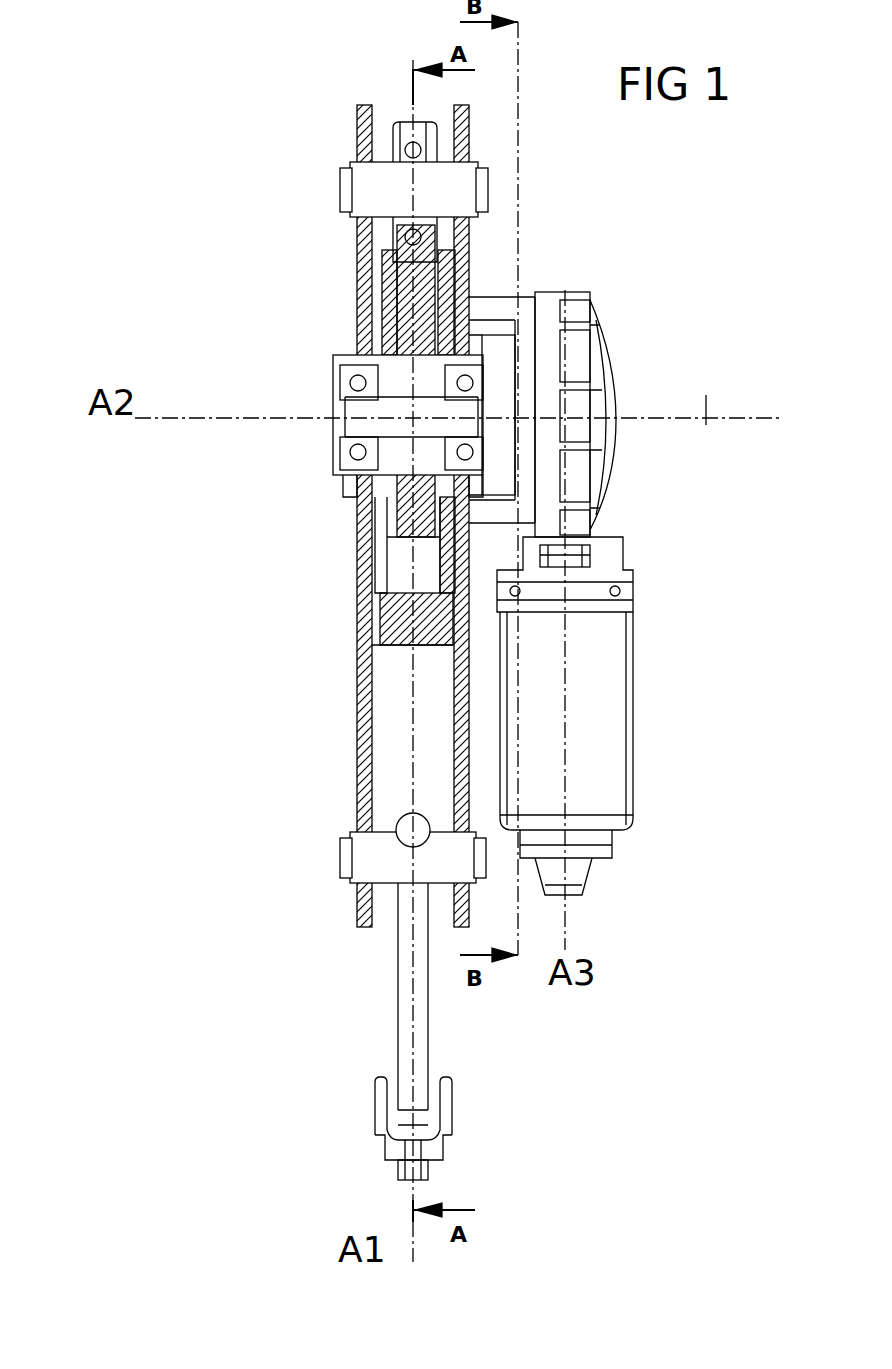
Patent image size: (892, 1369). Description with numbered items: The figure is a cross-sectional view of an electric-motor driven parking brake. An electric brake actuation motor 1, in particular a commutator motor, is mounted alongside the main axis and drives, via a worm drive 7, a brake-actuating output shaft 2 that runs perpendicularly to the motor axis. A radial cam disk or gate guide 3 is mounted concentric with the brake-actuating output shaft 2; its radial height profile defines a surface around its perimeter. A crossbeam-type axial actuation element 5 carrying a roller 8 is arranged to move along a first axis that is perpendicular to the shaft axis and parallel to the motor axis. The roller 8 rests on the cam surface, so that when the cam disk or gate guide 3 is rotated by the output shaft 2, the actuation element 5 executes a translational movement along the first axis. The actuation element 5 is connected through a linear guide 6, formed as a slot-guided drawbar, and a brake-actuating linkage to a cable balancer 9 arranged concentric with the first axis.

The electric brake actuation motor 1 is at (582, 712).
The brake-actuating output shaft 2 is at (355, 425).
The cam disk or gate guide 3 is at (395, 493).
The axial actuation element 5 is at (373, 180).
The linear guide 6 is at (455, 690).
The worm drive 7 is at (578, 355).
The roller 8 is at (400, 118).
The cable balancer 9 is at (395, 1125).